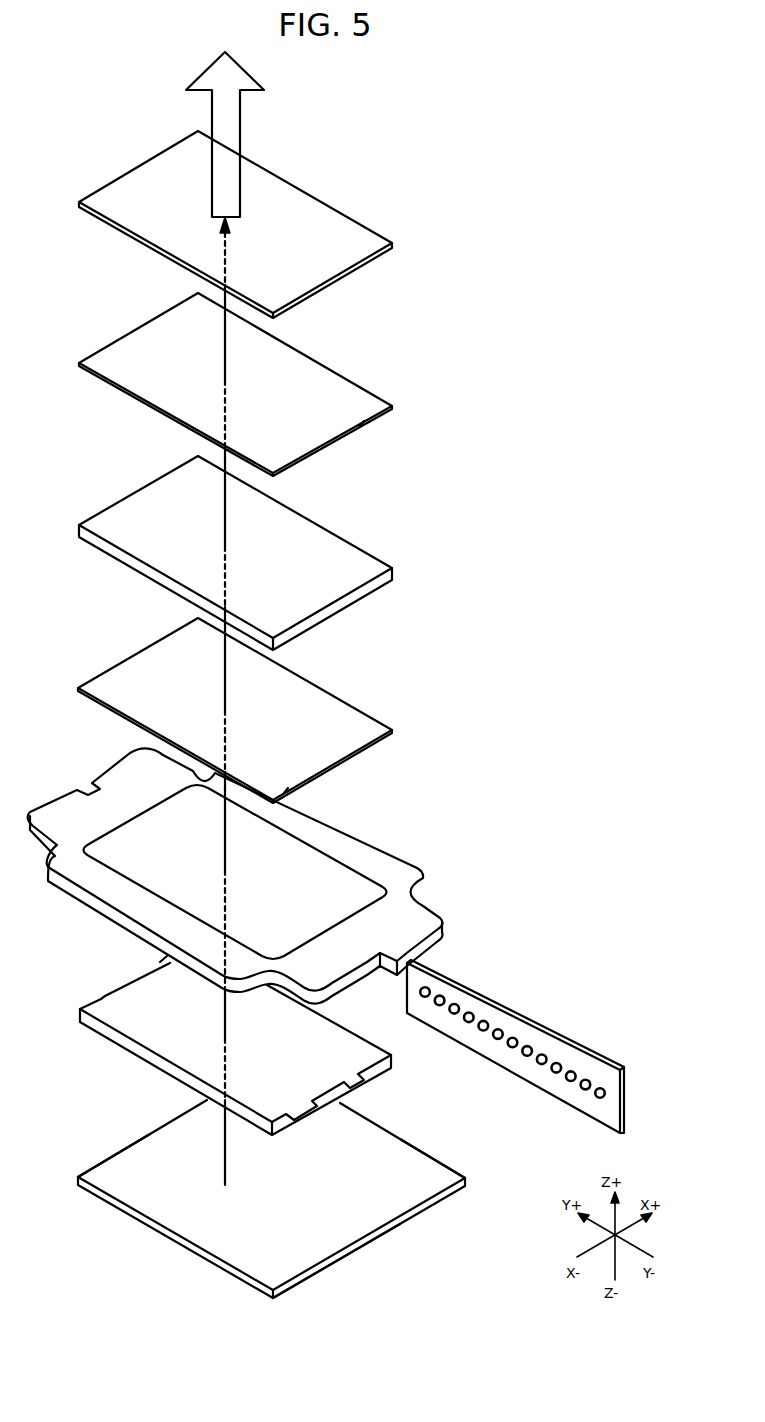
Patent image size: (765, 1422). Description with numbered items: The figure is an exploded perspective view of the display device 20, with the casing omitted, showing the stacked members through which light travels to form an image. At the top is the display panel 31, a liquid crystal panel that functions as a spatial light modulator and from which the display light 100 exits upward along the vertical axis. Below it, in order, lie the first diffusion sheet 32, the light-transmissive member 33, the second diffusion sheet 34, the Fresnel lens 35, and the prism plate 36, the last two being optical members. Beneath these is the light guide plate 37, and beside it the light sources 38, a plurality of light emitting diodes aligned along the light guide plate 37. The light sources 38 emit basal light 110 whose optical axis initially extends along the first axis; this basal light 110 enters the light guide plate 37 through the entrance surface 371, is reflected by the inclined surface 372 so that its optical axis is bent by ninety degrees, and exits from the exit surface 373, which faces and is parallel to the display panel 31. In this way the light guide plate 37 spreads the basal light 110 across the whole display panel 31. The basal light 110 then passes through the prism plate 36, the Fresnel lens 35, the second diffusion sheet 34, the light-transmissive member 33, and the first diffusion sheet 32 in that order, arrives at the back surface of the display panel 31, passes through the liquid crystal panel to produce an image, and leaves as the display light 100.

The display device 20 is at (556, 204).
The display panel 31 is at (394, 243).
The first diffusion sheet 32 is at (392, 407).
The light-transmissive member 33 is at (394, 570).
The second diffusion sheet 34 is at (392, 732).
The Fresnel lens 35 is at (424, 873).
The prism plate 36 is at (380, 1090).
The light guide plate 37 is at (467, 1178).
The entrance surface 371 is at (427, 1149).
The inclined surface 372 is at (353, 1252).
The exit surface 373 is at (133, 1162).
The light sources 38 is at (517, 1040).
The display light 100 is at (242, 131).
The basal light 110 is at (227, 352).